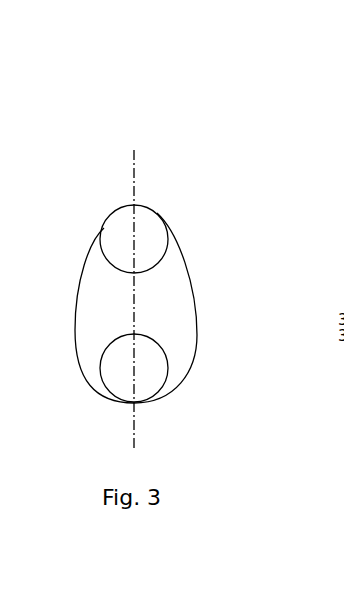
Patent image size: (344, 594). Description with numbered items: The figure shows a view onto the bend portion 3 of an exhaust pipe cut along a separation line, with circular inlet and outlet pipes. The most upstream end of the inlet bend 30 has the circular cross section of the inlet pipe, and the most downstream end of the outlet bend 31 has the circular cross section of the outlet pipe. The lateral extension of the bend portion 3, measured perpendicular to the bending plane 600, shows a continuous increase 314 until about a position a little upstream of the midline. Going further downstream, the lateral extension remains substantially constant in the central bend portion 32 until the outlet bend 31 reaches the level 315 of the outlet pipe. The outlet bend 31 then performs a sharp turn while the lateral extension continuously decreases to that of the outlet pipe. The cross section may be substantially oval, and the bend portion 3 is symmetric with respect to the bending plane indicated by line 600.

The bending plane 600 is at (134, 152).
The bend portion 3 is at (146, 148).
The inlet bend 30 is at (153, 208).
The outlet bend 31 is at (152, 382).
The continuous increase 314 is at (183, 257).
The level of the outlet pipe 315 is at (193, 375).
The central bend portion 32 is at (160, 312).